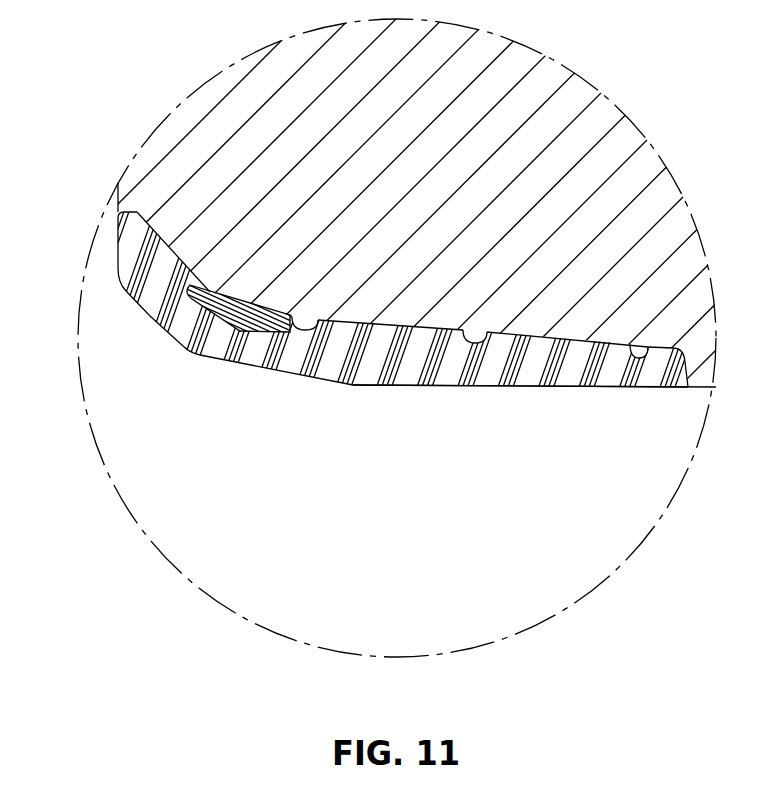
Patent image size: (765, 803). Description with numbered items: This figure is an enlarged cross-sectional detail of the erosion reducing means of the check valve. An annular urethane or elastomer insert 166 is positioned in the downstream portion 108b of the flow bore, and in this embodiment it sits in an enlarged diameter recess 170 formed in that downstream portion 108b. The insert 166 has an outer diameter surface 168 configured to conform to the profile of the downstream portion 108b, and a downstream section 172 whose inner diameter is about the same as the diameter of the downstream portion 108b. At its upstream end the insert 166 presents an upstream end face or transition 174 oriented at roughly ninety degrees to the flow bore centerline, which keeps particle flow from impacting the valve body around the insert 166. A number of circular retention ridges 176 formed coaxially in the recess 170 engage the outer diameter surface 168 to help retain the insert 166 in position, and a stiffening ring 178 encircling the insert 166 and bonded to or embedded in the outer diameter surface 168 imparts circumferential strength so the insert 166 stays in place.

The downstream portion 108b is at (693, 387).
The insert 166 is at (294, 377).
The outer diameter surface 168 is at (530, 320).
The enlarged diameter recess 170 is at (665, 355).
The downstream section 172 is at (533, 387).
The upstream end face 174 is at (118, 240).
The retention ridges 176 is at (476, 344).
The stiffening ring 178 is at (190, 293).